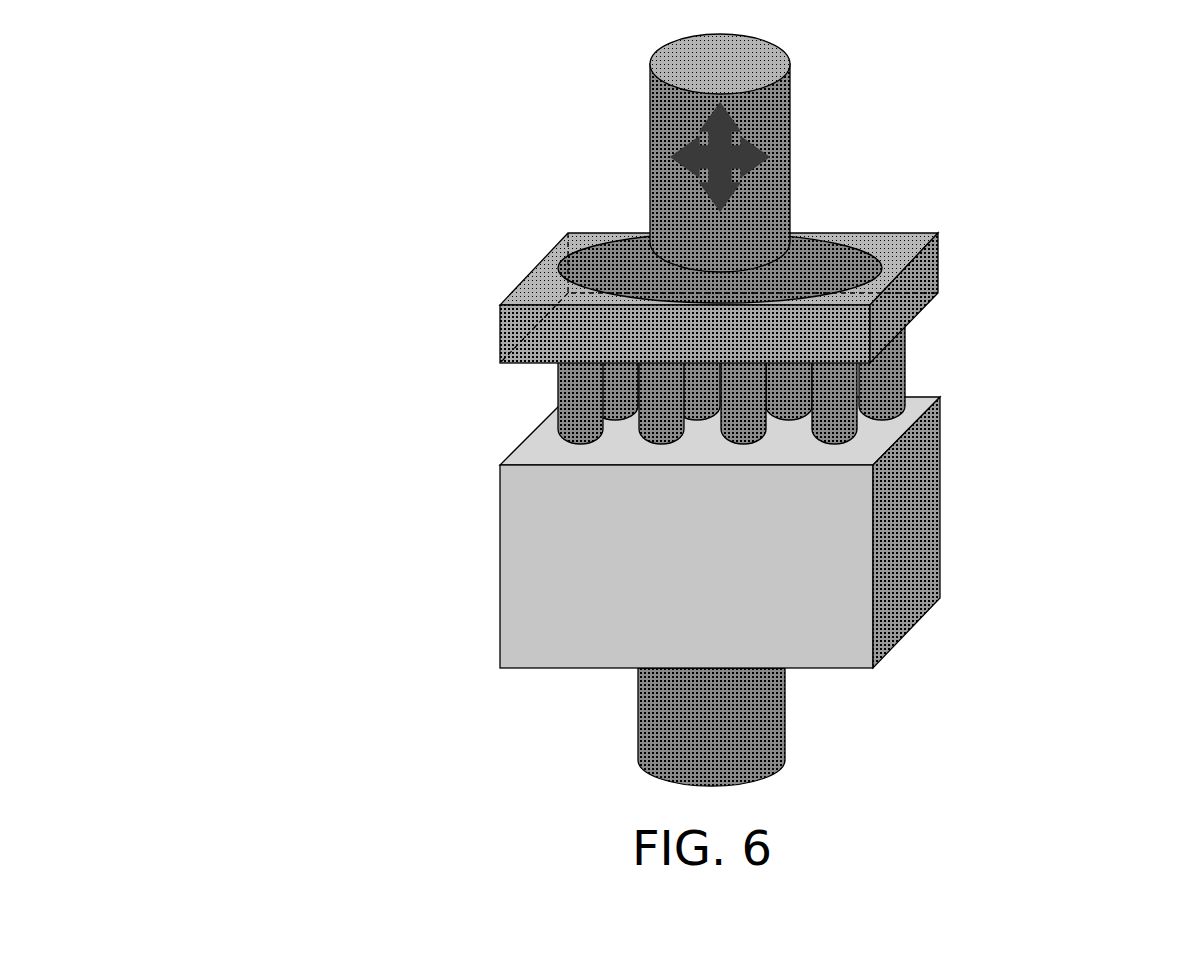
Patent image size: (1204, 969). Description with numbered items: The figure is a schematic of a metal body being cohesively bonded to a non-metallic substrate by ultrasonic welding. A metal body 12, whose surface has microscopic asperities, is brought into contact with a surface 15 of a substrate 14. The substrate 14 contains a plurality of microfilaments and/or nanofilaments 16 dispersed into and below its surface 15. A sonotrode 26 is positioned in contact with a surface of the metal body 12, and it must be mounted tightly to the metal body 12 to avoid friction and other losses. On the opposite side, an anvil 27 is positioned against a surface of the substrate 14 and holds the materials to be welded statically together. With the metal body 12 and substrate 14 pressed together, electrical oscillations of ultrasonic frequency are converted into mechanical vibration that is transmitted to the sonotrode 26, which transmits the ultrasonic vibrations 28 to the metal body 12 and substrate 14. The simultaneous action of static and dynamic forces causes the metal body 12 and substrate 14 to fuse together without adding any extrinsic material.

The metal body 12 is at (542, 290).
The substrate 14 is at (585, 591).
The surface 15 is at (520, 443).
The microfilaments and/or nanofilaments 16 is at (905, 383).
The sonotrode 26 is at (790, 138).
The anvil 27 is at (790, 750).
The ultrasonic vibrations 28 is at (670, 143).